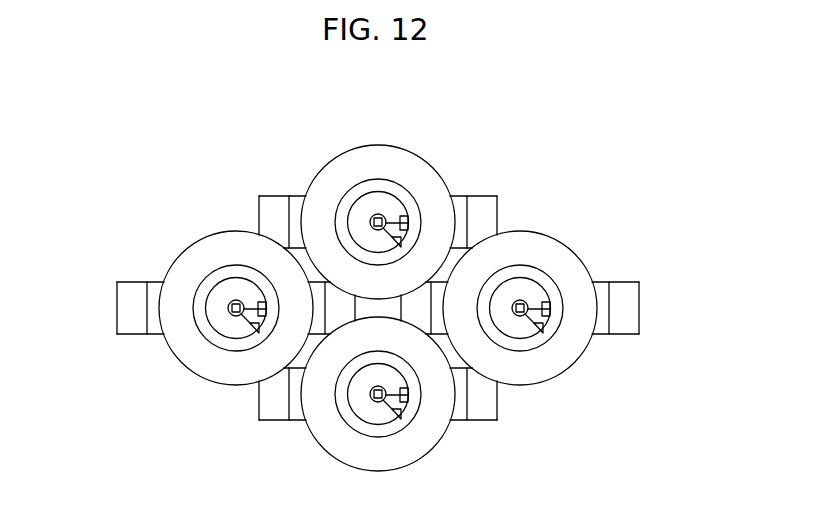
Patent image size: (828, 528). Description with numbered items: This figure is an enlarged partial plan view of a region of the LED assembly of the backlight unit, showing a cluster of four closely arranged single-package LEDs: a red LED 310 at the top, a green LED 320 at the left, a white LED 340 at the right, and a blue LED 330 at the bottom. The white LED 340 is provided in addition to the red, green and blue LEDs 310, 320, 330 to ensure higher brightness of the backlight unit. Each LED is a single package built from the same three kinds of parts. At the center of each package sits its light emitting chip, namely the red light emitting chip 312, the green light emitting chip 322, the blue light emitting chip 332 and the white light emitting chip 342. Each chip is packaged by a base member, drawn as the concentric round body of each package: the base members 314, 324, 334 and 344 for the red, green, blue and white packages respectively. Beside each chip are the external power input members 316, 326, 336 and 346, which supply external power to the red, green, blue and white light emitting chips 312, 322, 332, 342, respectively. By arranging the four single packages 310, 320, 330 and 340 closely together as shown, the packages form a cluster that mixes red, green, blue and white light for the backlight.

The red LED 310 is at (535, 113).
The red light emitting chip 312 is at (376, 214).
The base member 314 is at (387, 153).
The external power input member 316 is at (397, 230).
The green LED 320 is at (77, 197).
The green light emitting chip 322 is at (235, 299).
The base member 324 is at (226, 237).
The external power input member 326 is at (222, 303).
The blue LED 330 is at (537, 438).
The blue light emitting chip 332 is at (379, 403).
The base member 334 is at (388, 465).
The external power input member 336 is at (400, 412).
The white LED 340 is at (680, 197).
The white light emitting chip 342 is at (519, 299).
The base member 344 is at (529, 236).
The external power input member 346 is at (535, 308).